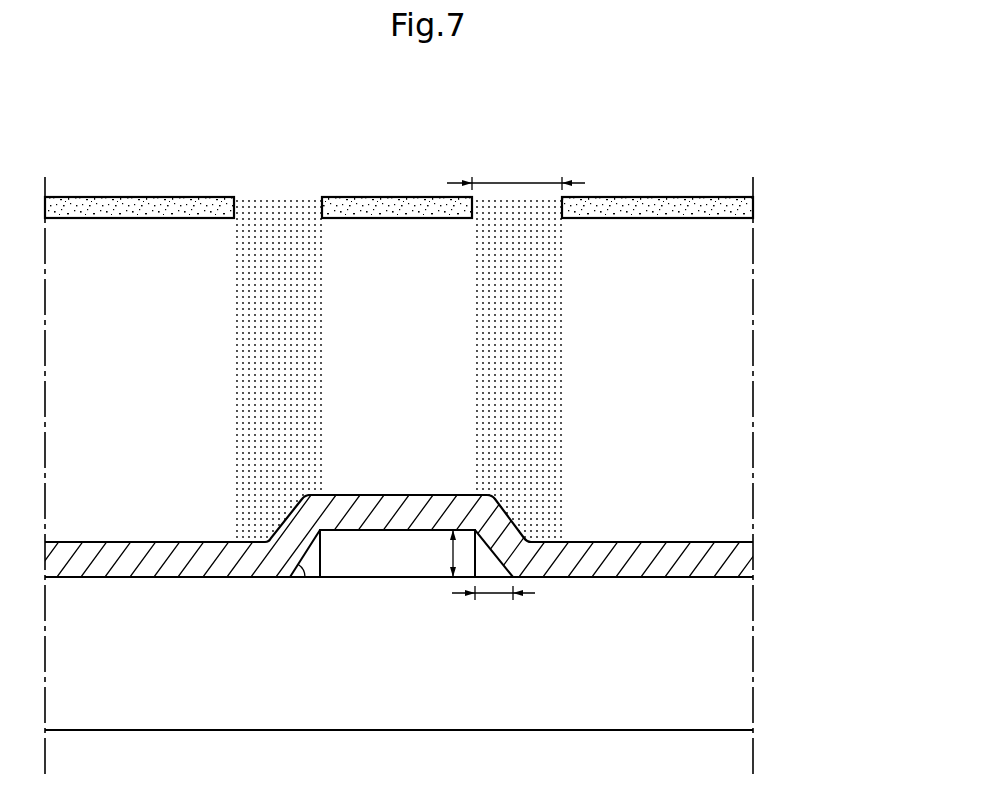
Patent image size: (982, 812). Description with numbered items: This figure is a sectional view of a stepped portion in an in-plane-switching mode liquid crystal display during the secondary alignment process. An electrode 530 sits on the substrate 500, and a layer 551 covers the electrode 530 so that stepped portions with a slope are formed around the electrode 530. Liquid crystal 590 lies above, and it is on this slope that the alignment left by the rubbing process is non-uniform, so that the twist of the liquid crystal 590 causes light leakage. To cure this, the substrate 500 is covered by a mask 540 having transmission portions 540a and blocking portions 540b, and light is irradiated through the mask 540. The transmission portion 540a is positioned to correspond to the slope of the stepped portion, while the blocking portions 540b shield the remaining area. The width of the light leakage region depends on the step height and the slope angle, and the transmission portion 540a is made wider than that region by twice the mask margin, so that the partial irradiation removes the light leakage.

The substrate 500 is at (740, 645).
The electrode 530 is at (395, 556).
The gate insulating layer 551 is at (740, 562).
The liquid crystal 590 is at (737, 415).
The mask 540 is at (422, 172).
The transmission portion 540a is at (267, 210).
The blocking portion 540b is at (390, 200).